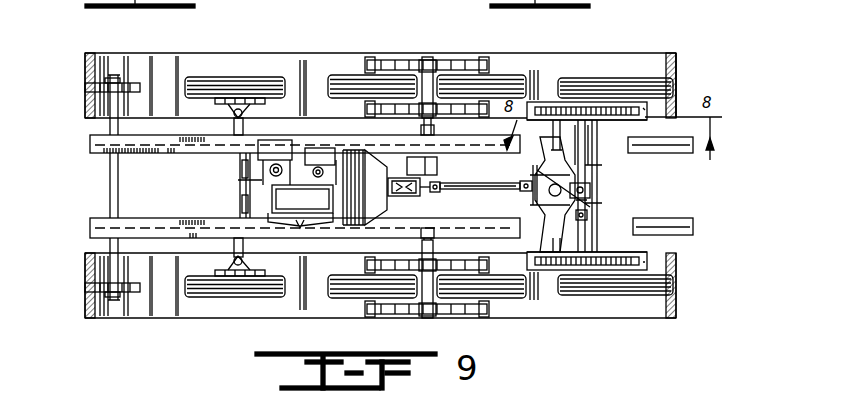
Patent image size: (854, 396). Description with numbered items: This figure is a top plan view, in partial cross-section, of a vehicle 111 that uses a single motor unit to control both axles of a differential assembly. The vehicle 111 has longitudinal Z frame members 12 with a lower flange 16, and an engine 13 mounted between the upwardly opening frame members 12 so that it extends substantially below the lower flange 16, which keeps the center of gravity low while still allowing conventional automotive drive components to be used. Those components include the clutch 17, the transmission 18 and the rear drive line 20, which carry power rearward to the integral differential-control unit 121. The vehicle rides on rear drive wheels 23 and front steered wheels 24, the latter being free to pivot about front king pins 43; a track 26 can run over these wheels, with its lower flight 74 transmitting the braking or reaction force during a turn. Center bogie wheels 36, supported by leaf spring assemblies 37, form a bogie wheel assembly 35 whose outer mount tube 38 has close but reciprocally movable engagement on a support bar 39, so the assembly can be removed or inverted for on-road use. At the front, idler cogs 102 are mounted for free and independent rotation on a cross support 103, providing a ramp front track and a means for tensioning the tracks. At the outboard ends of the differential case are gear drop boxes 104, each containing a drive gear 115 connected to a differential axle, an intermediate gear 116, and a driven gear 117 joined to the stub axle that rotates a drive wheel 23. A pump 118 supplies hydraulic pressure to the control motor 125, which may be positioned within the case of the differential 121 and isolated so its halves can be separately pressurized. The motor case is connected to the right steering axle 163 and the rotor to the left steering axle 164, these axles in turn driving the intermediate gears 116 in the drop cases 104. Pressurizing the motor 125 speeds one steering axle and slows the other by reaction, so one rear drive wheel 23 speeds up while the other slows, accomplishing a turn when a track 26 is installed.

The longitudinal Z frame member 12 is at (92, 142).
The engine 13 is at (312, 207).
The lower flange 16 is at (172, 154).
The clutch 17 is at (365, 187).
The transmission 18 is at (398, 196).
The rear drive line 20 is at (470, 190).
The drive wheels 23 is at (645, 78).
The front steered wheels 24 is at (232, 77).
The track 26 is at (558, 53).
The bogie wheel assembly 35 is at (428, 70).
The center bogie wheels 36 is at (320, 75).
The leaf spring assemblies 37 is at (474, 60).
The outer mount tube 38 is at (428, 57).
The support bar 39 is at (434, 131).
The front king pins 43 is at (234, 114).
The lower flight 74 is at (178, 60).
The front idler cogs 102 is at (86, 88).
The cross support 103 is at (110, 176).
The gear drop boxes 104 is at (540, 102).
The vehicle 111 is at (691, 77).
The drive gear 115 is at (556, 102).
The intermediate gear 116 is at (583, 102).
The driven gear 117 is at (643, 110).
The pump 118 is at (410, 157).
The integral differential-control unit 121 is at (580, 165).
The control motor 125 is at (592, 192).
The right steering axle 163 is at (588, 135).
The left steering axle 164 is at (587, 235).